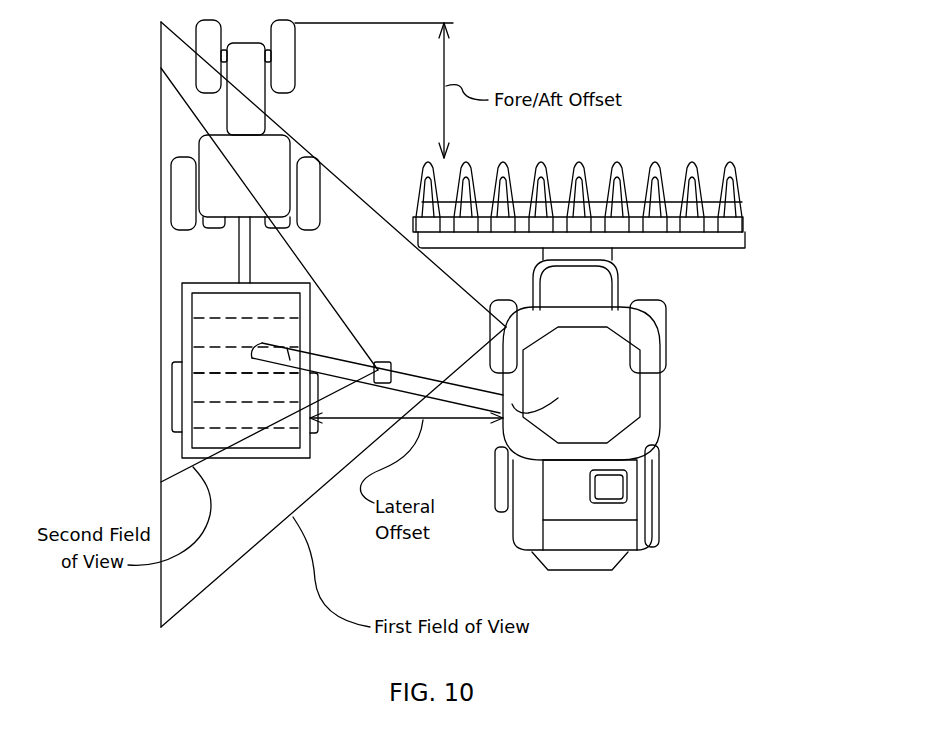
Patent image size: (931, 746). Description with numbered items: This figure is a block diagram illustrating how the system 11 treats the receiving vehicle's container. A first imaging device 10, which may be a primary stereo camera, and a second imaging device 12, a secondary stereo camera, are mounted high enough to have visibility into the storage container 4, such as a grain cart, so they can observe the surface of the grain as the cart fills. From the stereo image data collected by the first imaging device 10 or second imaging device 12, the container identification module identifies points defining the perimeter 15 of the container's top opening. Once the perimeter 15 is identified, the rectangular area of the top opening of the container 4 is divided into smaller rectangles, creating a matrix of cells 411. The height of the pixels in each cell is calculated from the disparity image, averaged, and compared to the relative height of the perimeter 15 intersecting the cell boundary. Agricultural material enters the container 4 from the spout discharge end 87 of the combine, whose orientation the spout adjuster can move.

The storage container 4 is at (150, 293).
The perimeter 15 is at (310, 308).
The matrix of cells 411 is at (222, 373).
The spout discharge end 87 is at (250, 347).
The second imaging device 12 is at (383, 371).
The first imaging device 10 is at (506, 327).
The system 11 is at (608, 487).